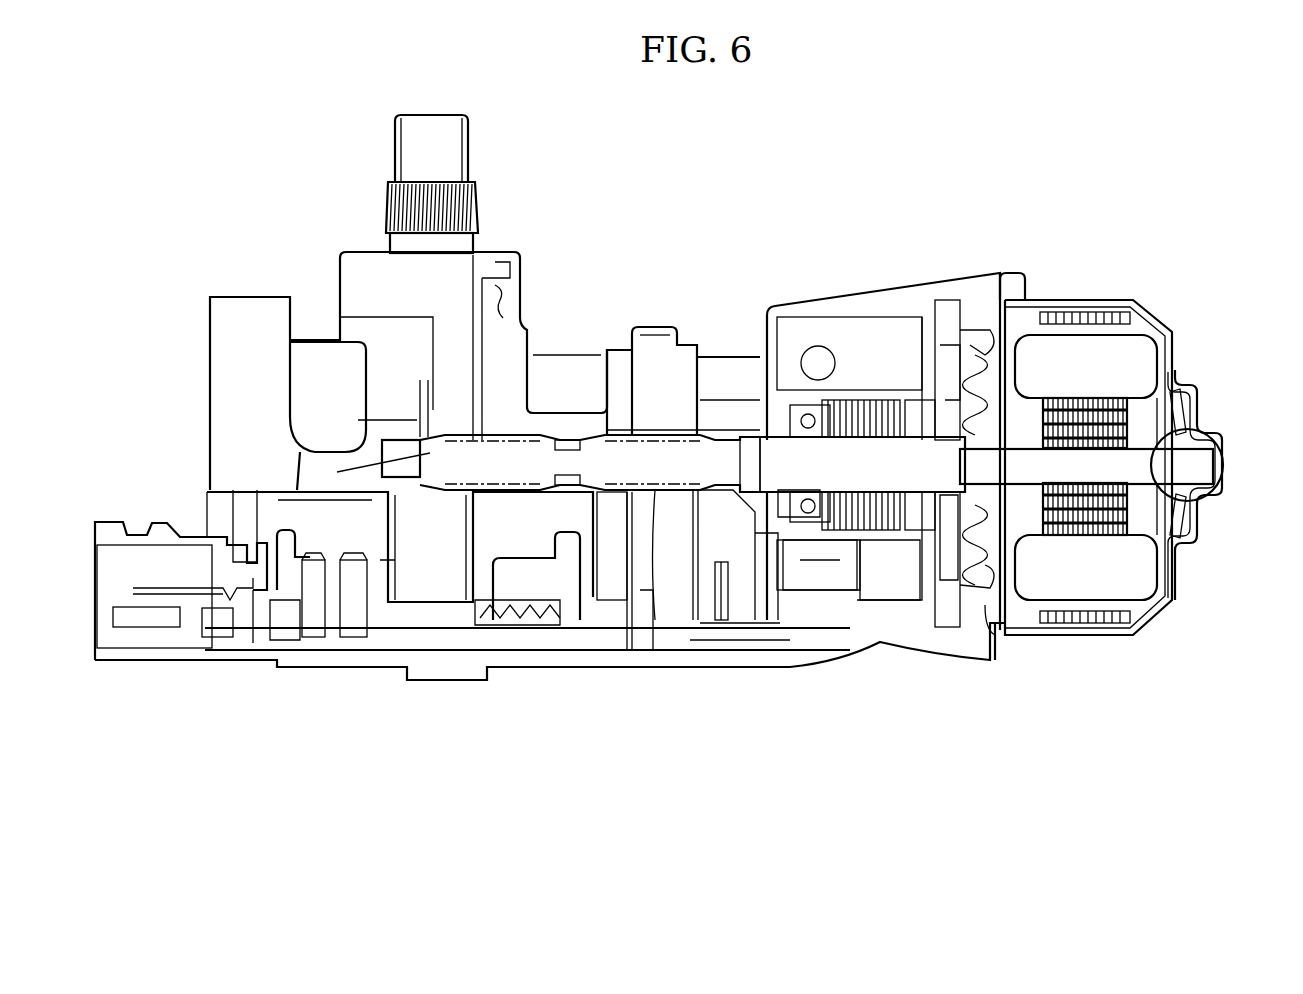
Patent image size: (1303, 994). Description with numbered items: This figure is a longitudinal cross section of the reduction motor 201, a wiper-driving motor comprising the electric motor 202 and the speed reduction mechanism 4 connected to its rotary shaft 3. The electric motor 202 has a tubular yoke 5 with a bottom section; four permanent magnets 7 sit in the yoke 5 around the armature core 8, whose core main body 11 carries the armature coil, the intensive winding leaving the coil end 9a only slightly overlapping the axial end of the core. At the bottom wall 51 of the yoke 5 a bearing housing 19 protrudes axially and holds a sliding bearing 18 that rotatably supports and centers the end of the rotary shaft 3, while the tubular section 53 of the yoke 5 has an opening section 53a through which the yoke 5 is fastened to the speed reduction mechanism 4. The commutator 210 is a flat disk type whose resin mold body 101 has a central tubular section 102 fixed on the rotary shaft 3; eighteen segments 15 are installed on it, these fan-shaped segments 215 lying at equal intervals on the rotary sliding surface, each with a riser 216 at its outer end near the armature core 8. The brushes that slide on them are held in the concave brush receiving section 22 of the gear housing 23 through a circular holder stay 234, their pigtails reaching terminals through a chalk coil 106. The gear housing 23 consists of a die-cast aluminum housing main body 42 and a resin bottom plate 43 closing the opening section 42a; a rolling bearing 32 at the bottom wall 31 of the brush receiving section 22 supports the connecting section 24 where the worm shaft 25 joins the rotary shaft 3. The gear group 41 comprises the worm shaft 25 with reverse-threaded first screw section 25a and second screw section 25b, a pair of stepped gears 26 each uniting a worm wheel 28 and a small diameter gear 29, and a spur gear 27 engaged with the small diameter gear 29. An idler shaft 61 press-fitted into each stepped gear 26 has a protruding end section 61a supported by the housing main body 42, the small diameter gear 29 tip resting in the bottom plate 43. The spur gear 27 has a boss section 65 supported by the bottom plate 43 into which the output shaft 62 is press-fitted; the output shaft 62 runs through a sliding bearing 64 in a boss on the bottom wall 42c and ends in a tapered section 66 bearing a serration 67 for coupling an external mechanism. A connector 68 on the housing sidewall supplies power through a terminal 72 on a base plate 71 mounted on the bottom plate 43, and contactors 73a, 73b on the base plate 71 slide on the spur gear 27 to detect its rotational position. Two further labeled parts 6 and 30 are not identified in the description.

The reduction motor 201 is at (1167, 156).
The electric motor 202 is at (1050, 276).
The rotary shaft 3 is at (1127, 443).
The speed reduction mechanism 4 is at (705, 298).
The yoke 5 is at (1055, 642).
The yoke 6 is at (1160, 330).
The permanent magnet 7 is at (1090, 318).
The armature core 8 is at (1096, 358).
The coil end 9a is at (1140, 367).
The core main body 11 is at (1147, 460).
The segment 15 is at (955, 360).
The sliding bearing 18 is at (1205, 441).
The bearing housing 19 is at (1210, 524).
The brush receiving section 22 is at (865, 290).
The gear housing 23 is at (615, 298).
The connecting section 24 is at (748, 440).
The worm shaft 25 is at (684, 428).
The first screw section 25a is at (677, 494).
The second screw section 25b is at (500, 632).
The stepped gear 26 is at (628, 598).
The spur gear 27 is at (350, 600).
The worm wheel 28 is at (575, 440).
The small diameter gear 29 is at (703, 530).
The clutch cover 30 is at (895, 592).
The bottom wall 31 is at (810, 542).
The rolling bearing 32 is at (805, 418).
The gear group 41 is at (542, 588).
The housing main body 42 is at (208, 362).
The opening section 42a is at (775, 598).
The bottom wall 42c is at (318, 340).
The bottom plate 43 is at (452, 668).
The bottom wall 51 is at (1200, 548).
The tubular section 53 is at (1090, 640).
The opening section 53a is at (995, 626).
The idler shaft 61 is at (632, 375).
The protruding end section 61a is at (640, 330).
The output shaft 62 is at (405, 517).
The sliding bearing 64 is at (500, 300).
The boss section 65 is at (415, 605).
The tapered section 66 is at (393, 210).
The serration 67 is at (470, 212).
The connector 68 is at (138, 662).
The base plate 71 is at (347, 542).
The terminal 72 is at (183, 592).
The contactor 73a is at (300, 578).
The contactor 73b is at (390, 612).
The resin mold body 101 is at (940, 410).
The tubular section 102 is at (943, 417).
The chalk coil 106 is at (868, 410).
The commutator 210 is at (950, 602).
The segment 215 is at (947, 578).
The riser 216 is at (975, 330).
The holder stay 234 is at (947, 345).